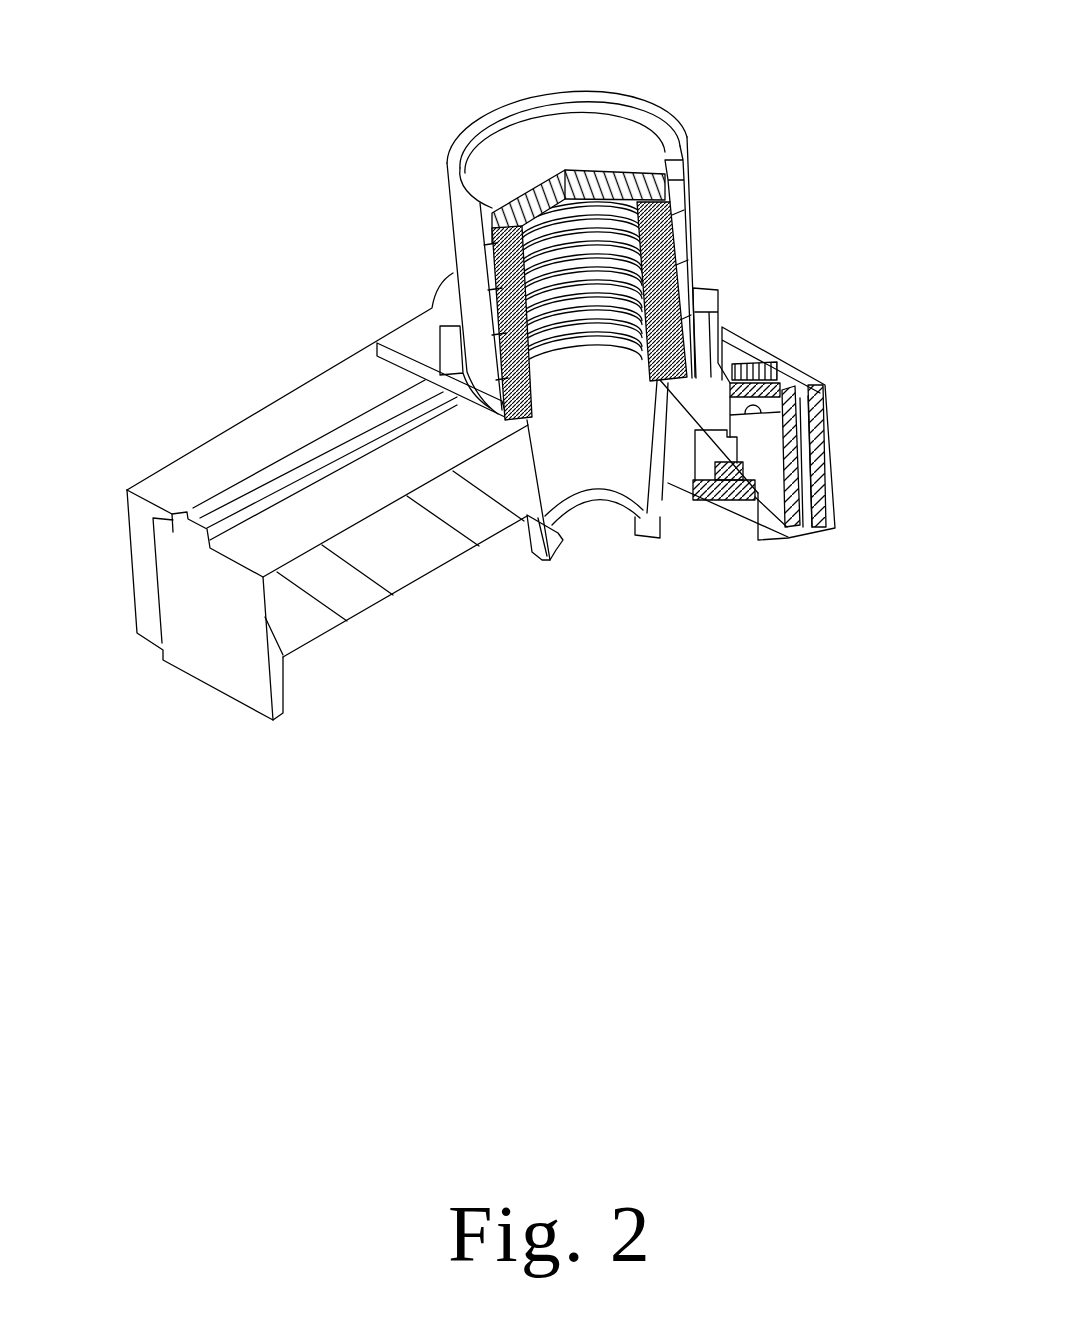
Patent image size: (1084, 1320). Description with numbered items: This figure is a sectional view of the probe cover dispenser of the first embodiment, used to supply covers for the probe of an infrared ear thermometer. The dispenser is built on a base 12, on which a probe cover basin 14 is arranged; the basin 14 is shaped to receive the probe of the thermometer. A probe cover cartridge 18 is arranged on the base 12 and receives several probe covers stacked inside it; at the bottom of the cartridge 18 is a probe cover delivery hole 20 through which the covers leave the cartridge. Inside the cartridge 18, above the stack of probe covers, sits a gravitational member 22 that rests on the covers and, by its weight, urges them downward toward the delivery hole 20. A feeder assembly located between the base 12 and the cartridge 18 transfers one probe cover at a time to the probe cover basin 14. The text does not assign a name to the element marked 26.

The base 12 is at (252, 672).
The probe cover basin 14 is at (552, 453).
The probe cover cartridge 18 is at (463, 238).
The probe cover delivery hole 20 is at (570, 367).
The gravitational member 22 is at (520, 150).
The slot 26 is at (273, 477).